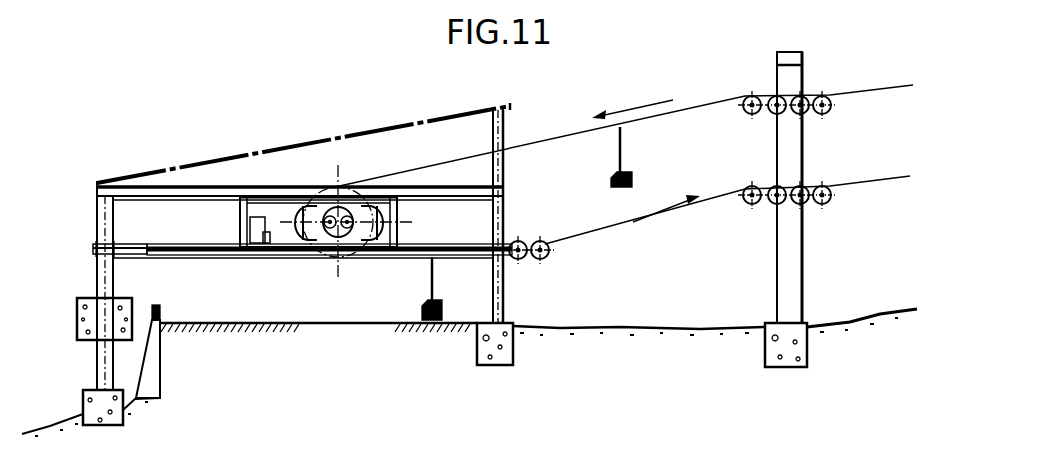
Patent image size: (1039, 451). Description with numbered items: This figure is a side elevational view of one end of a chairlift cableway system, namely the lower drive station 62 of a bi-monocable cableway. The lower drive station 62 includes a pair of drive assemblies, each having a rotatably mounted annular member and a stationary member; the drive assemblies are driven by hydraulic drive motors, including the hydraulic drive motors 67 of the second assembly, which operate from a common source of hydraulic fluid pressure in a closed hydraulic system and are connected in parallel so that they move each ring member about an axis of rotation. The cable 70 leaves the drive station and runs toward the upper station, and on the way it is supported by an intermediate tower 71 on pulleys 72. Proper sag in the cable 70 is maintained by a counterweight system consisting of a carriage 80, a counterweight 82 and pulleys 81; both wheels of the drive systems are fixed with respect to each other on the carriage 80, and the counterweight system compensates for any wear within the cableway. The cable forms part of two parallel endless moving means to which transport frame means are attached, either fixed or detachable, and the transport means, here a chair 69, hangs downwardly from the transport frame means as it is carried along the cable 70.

The lower drive station 62 is at (310, 122).
The hydraulic drive motor 67 is at (312, 253).
The chair 69 is at (640, 170).
The cable 70 is at (714, 102).
The intermediate tower 71 is at (802, 78).
The pulleys 72 is at (827, 108).
The carriage 80 is at (241, 216).
The pulleys 81 is at (97, 243).
The counterweight 82 is at (77, 313).